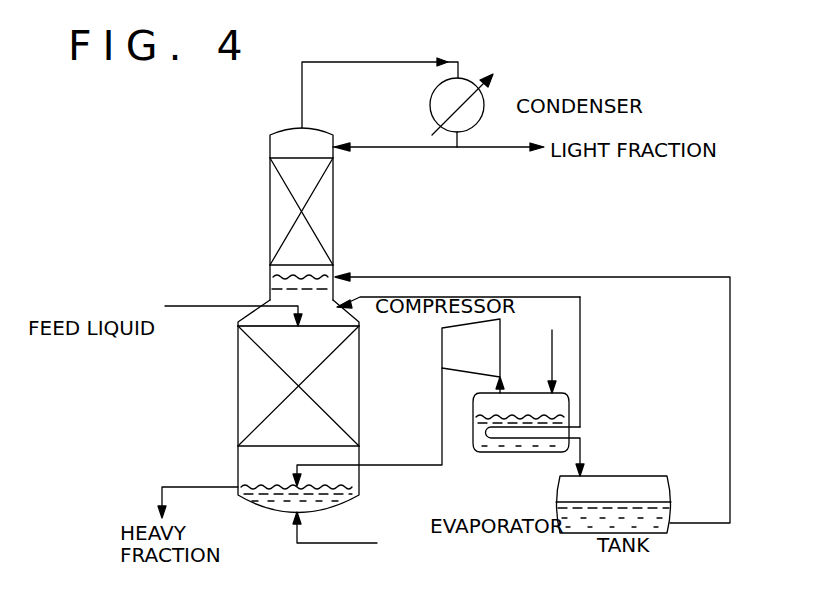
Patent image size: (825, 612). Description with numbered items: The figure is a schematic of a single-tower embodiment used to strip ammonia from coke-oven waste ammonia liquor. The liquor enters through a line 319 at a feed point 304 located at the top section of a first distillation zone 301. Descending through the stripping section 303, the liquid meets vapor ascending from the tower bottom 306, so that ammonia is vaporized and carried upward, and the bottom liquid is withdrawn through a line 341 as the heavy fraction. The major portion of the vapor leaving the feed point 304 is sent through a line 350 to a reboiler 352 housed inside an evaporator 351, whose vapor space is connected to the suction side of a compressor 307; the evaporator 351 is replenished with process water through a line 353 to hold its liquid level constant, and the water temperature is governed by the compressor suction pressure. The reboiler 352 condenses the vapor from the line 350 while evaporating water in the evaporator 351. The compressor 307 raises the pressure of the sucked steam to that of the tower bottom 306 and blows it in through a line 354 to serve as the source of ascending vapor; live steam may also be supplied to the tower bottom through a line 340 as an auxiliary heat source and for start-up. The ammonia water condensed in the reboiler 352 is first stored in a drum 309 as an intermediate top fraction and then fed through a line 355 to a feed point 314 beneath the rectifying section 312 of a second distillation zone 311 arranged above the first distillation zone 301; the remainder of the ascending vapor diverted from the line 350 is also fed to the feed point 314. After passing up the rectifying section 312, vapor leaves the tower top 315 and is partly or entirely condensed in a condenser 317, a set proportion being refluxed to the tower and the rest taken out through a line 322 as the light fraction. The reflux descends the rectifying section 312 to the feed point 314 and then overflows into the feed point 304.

The first distillation zone 301 is at (368, 434).
The stripping section 303 is at (238, 396).
The feed point 304 is at (238, 327).
The tower bottom 306 is at (256, 466).
The compressor 307 is at (442, 329).
The drum 309 is at (645, 476).
The second distillation zone 311 is at (351, 236).
The rectifying section 312 is at (270, 222).
The feed point 314 is at (272, 276).
The tower top 315 is at (280, 152).
The condenser 317 is at (484, 103).
The line 319 is at (208, 310).
The line 322 is at (502, 148).
The line 340 is at (338, 544).
The line 341 is at (200, 489).
The line 350 is at (580, 392).
The evaporator 351 is at (510, 455).
The reboiler 352 is at (571, 437).
The line 353 is at (552, 357).
The line 354 is at (403, 467).
The line 355 is at (730, 428).